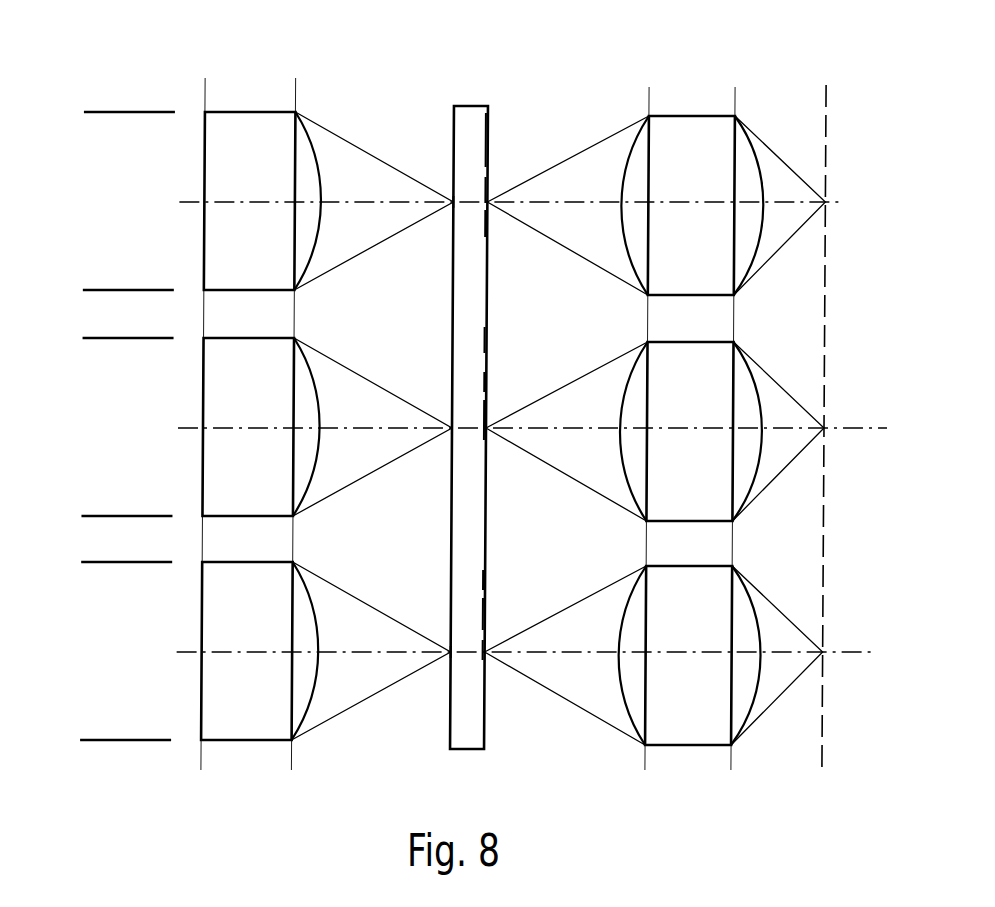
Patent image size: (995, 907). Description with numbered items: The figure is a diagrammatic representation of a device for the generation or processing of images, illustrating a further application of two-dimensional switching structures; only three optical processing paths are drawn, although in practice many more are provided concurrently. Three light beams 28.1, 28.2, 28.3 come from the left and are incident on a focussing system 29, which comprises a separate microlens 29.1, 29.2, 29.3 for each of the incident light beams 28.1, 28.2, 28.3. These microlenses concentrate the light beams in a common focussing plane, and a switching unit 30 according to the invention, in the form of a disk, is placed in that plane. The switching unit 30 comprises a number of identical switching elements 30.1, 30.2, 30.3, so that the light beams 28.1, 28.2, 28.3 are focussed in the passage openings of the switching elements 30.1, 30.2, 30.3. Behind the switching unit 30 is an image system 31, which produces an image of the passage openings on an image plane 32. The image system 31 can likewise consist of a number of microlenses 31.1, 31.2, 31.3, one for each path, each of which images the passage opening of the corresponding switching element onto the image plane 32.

The light beam 28.1 is at (142, 202).
The light beam 28.2 is at (157, 428).
The light beam 28.3 is at (152, 652).
The focussing system 29 is at (250, 92).
The microlens 29.1 is at (329, 201).
The microlens 29.2 is at (327, 427).
The microlens 29.3 is at (326, 651).
The switching unit 30 is at (468, 103).
The switching element 30.1 is at (451, 163).
The switching element 30.2 is at (450, 400).
The switching element 30.3 is at (449, 623).
The image system 31 is at (680, 103).
The microlens 31.1 is at (656, 205).
The microlens 31.2 is at (654, 431).
The microlens 31.3 is at (653, 655).
The image plane 32 is at (831, 92).